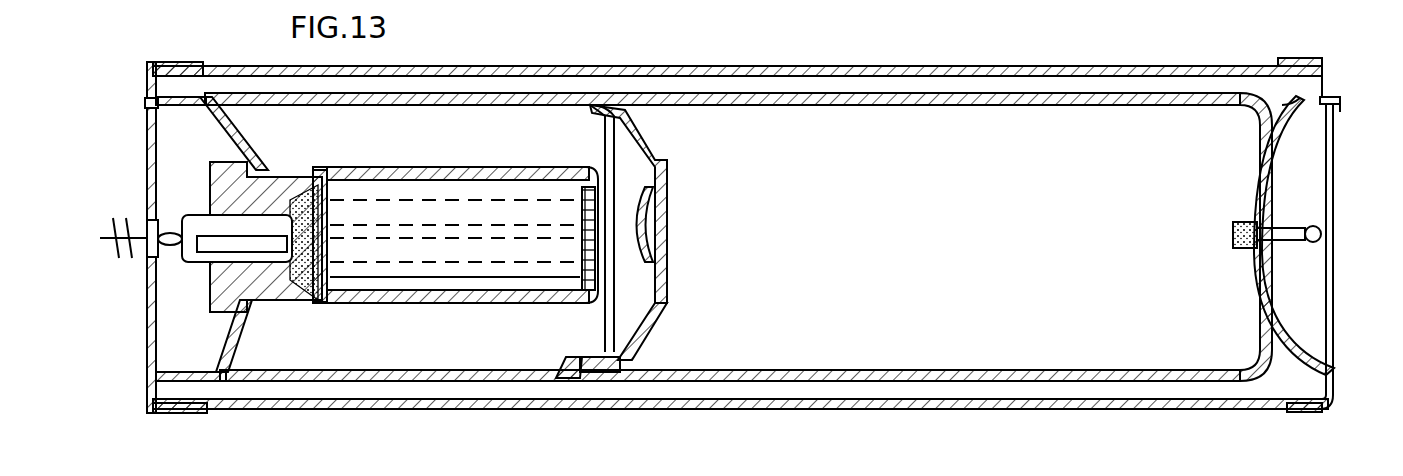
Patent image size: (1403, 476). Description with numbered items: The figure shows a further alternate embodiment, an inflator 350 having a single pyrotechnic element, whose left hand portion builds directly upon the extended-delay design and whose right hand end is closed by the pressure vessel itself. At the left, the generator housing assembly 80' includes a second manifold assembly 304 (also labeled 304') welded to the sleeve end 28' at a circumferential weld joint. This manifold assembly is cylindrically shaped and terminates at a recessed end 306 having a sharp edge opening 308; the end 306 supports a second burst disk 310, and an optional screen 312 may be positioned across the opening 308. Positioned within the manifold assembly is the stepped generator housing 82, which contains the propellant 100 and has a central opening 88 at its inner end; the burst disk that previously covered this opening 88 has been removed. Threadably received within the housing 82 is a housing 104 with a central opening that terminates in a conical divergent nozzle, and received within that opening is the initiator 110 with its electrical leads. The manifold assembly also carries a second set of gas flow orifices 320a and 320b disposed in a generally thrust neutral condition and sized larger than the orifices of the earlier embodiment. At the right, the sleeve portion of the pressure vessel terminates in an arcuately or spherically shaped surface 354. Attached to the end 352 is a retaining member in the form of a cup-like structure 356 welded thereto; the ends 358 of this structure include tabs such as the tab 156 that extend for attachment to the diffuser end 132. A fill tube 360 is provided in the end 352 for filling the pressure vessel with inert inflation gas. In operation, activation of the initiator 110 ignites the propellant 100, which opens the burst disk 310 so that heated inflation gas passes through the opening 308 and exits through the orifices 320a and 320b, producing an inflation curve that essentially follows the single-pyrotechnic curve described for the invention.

The inflator 350 is at (625, 59).
The second manifold assembly 304' is at (743, 206).
The sleeve end 28' is at (531, 206).
The diffuser end 132 is at (1336, 24).
The ends of cup-like structure 358 is at (1336, 98).
The tab 156 is at (1341, 104).
The gas flow orifice 320a is at (256, 96).
The gas flow orifice 320b is at (270, 376).
The end of sleeve portion 352 is at (1259, 150).
The arcuately shaped surface 354 is at (1256, 190).
The cup-like structure 356 is at (1290, 104).
The fill tube 360 is at (1241, 250).
The housing 104 is at (222, 157).
The generator housing assembly 80' is at (196, 212).
The initiator 110 is at (185, 262).
The stepped housing 82 is at (450, 164).
The propellant 100 is at (498, 268).
The central opening 88 is at (618, 247).
The sharp edge opening 308 is at (657, 197).
The second burst disk 310 is at (668, 230).
The recessed end 306 is at (650, 323).
The screen 312 is at (610, 326).
The second manifold assembly 304 is at (523, 404).